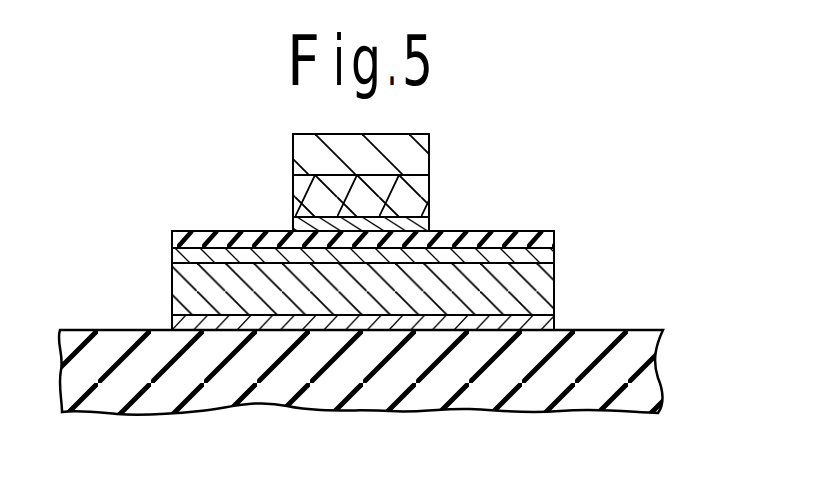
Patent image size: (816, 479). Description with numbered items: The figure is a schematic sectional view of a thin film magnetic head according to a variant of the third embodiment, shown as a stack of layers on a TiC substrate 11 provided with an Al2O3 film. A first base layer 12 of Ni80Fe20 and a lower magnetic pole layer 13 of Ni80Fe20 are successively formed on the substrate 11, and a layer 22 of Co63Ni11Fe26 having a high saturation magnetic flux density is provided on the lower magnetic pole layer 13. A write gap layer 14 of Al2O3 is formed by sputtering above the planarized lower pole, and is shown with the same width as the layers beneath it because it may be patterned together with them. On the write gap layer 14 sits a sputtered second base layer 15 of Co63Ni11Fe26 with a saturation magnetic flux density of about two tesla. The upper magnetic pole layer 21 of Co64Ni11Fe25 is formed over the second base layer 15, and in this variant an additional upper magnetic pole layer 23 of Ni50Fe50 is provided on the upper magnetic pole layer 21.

The TiC substrate 11 is at (653, 373).
The first base layer 12 is at (547, 327).
The lower magnetic pole layer 13 is at (540, 293).
The layer of Co63Ni11Fe26 having a high saturation magnetic flux density 22 is at (557, 250).
The write gap layer 14 is at (556, 239).
The second base layer 15 is at (420, 221).
The upper magnetic pole layer 21 is at (422, 192).
The additional upper magnetic pole layer 23 is at (308, 155).